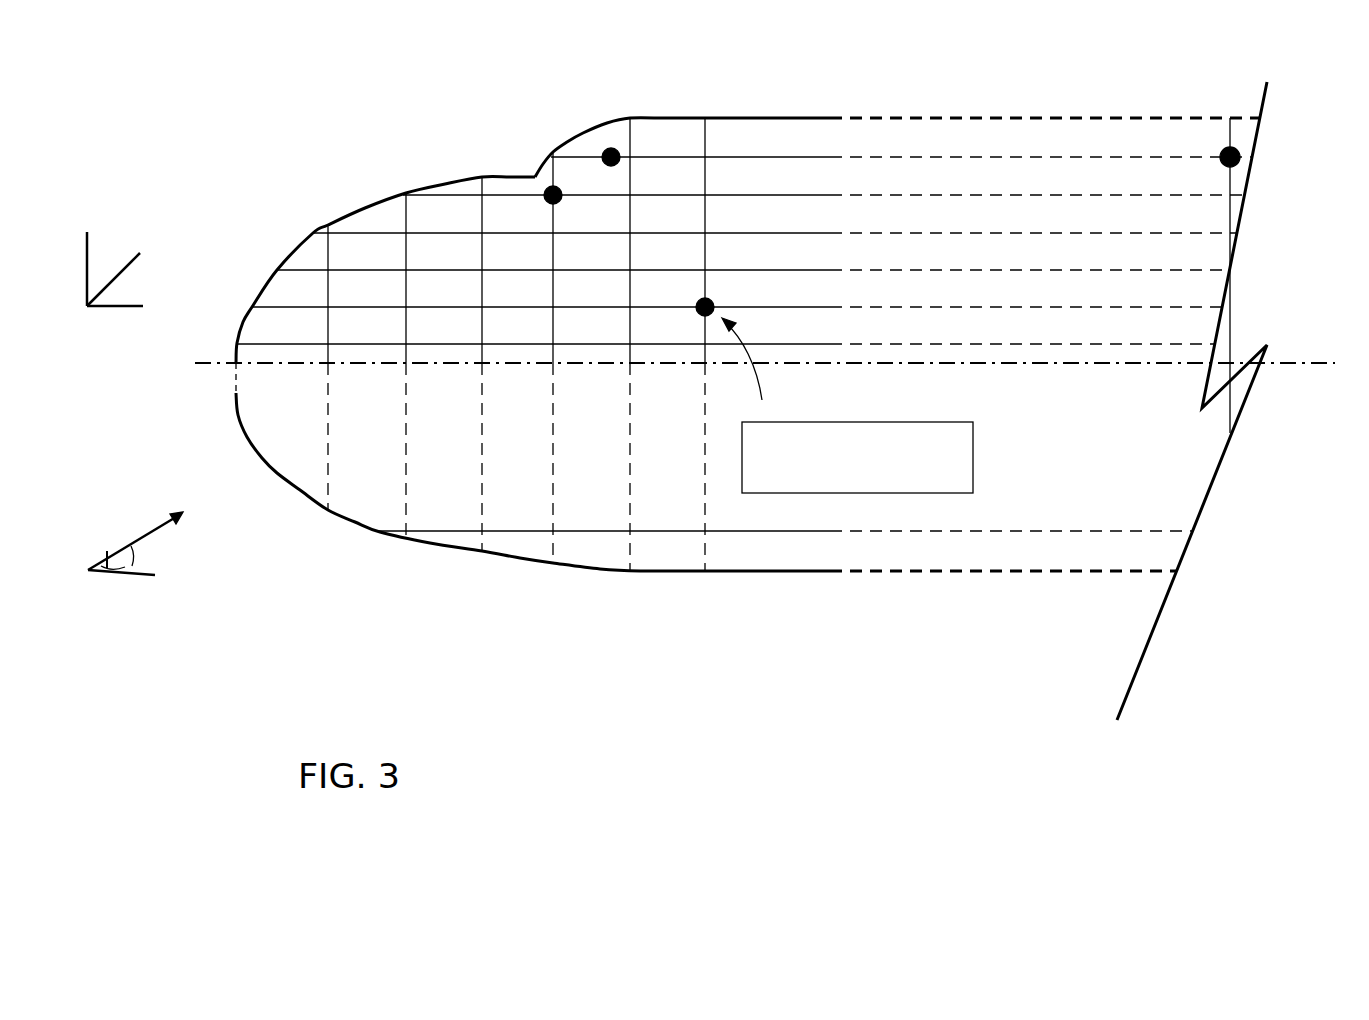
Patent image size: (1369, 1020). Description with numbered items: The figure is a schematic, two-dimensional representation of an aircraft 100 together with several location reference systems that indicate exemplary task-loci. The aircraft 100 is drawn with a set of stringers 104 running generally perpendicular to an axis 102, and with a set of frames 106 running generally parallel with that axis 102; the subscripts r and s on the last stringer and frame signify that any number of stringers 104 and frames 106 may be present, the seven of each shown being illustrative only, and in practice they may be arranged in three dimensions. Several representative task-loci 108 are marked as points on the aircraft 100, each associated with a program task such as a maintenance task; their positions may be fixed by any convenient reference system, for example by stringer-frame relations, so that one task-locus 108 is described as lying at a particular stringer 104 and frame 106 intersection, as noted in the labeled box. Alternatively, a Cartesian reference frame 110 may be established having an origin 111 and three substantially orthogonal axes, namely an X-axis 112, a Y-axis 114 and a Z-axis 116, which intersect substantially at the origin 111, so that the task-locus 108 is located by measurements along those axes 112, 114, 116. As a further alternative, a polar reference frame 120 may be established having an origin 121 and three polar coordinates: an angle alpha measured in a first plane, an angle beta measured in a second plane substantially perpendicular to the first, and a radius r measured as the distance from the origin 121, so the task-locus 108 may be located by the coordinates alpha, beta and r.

The aircraft 100 is at (577, 727).
The axis 102 is at (1307, 364).
The stringers 104 is at (752, 327).
The frames 106 is at (787, 331).
The task-loci 108 is at (864, 308).
The reference frame 110 is at (126, 250).
The origin 111 is at (87, 312).
The X-axis 112 is at (120, 310).
The Y-axis 114 is at (83, 262).
The Z-axis 116 is at (140, 258).
The reference frame 120 is at (138, 571).
The origin 121 is at (105, 558).